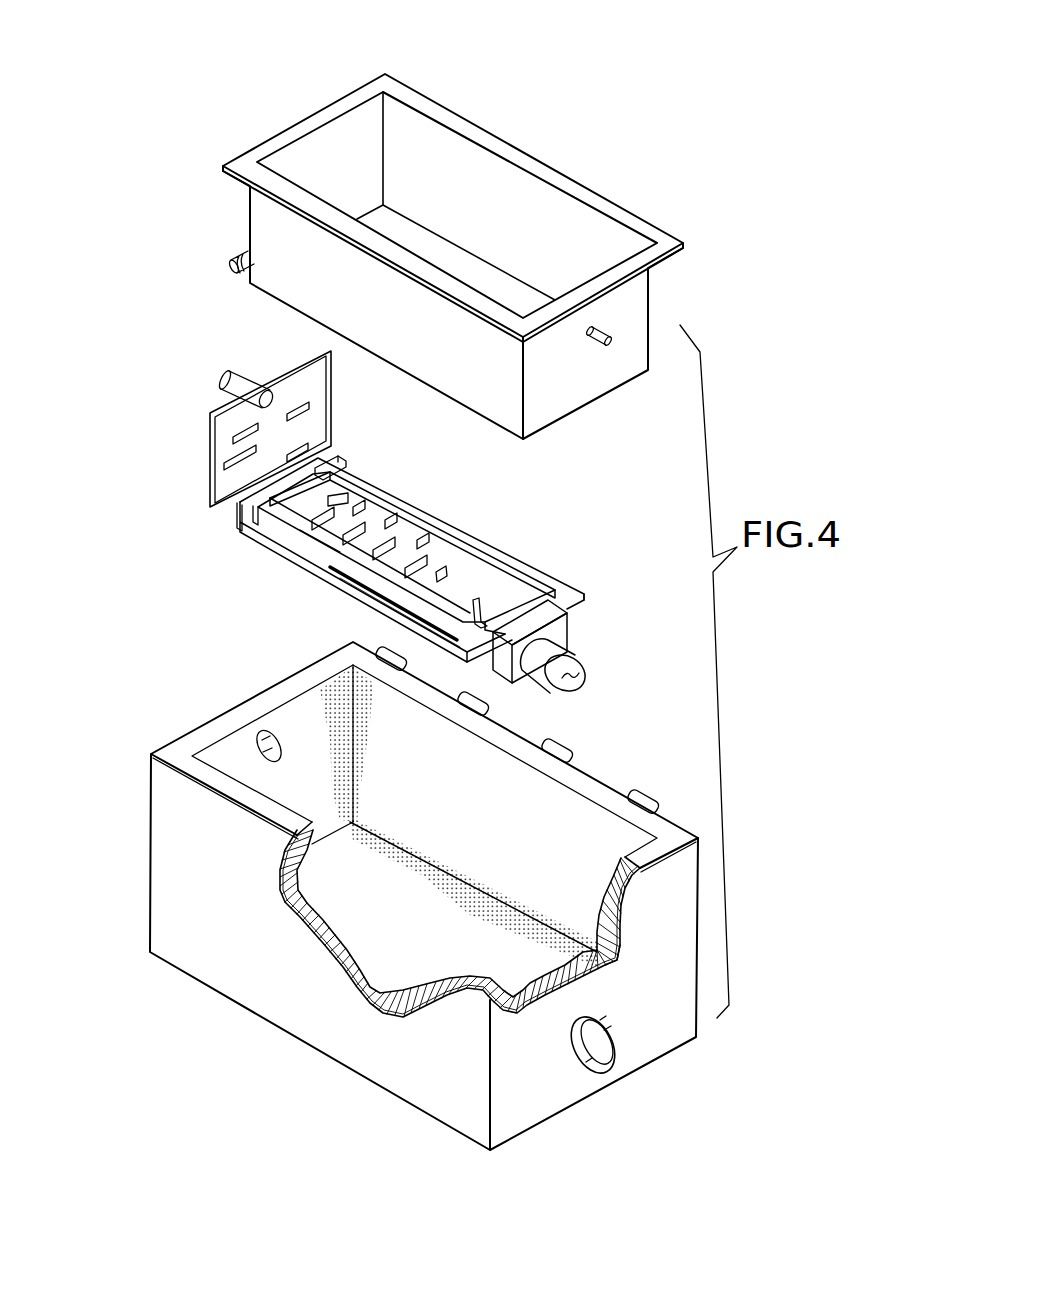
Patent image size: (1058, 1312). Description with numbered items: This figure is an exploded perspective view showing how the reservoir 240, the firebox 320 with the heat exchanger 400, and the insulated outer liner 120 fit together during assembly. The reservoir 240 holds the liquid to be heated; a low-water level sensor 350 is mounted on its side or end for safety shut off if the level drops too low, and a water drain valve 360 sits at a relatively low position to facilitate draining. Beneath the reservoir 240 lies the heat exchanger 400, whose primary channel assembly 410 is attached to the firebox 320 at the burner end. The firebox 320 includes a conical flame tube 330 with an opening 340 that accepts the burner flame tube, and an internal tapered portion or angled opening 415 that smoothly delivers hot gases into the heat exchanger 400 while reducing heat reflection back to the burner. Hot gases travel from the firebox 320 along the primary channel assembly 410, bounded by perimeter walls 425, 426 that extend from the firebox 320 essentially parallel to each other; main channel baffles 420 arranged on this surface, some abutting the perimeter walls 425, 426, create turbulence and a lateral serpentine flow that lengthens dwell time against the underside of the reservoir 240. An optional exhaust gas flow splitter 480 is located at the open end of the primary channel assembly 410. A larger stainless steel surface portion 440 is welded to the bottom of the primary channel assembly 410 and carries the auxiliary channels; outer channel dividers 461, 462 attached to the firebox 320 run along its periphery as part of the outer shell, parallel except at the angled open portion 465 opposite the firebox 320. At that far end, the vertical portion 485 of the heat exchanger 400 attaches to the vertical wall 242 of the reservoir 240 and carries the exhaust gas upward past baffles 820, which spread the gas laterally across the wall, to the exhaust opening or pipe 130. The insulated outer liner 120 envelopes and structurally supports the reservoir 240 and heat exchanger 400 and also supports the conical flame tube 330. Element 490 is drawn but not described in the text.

The insulated outer liner 120 is at (220, 937).
The exhaust opening or pipe 130 is at (222, 368).
The reservoir 240 is at (480, 197).
The vertical wall 242 is at (363, 149).
The firebox 320 is at (565, 627).
The conical flame tube 330 is at (572, 652).
The opening 340 is at (578, 681).
The low-water level sensor 350 is at (612, 335).
The water drain valve 360 is at (230, 255).
The heat exchanger 400 is at (158, 420).
The primary channel assembly 410 is at (435, 595).
The tapered portion or angled opening 415 is at (478, 605).
The main channel baffles 420 is at (416, 557).
The perimeter wall 425 is at (327, 545).
The perimeter wall 426 is at (442, 571).
The surface portion 440 is at (285, 508).
The outer channel divider 461 is at (565, 583).
The outer channel divider 462 is at (357, 590).
The angled open portion 465 is at (330, 477).
The exhaust gas flow splitter 480 is at (240, 510).
The vertical portion 485 is at (212, 442).
The wall section 490 is at (619, 973).
The baffles 820 is at (297, 400).